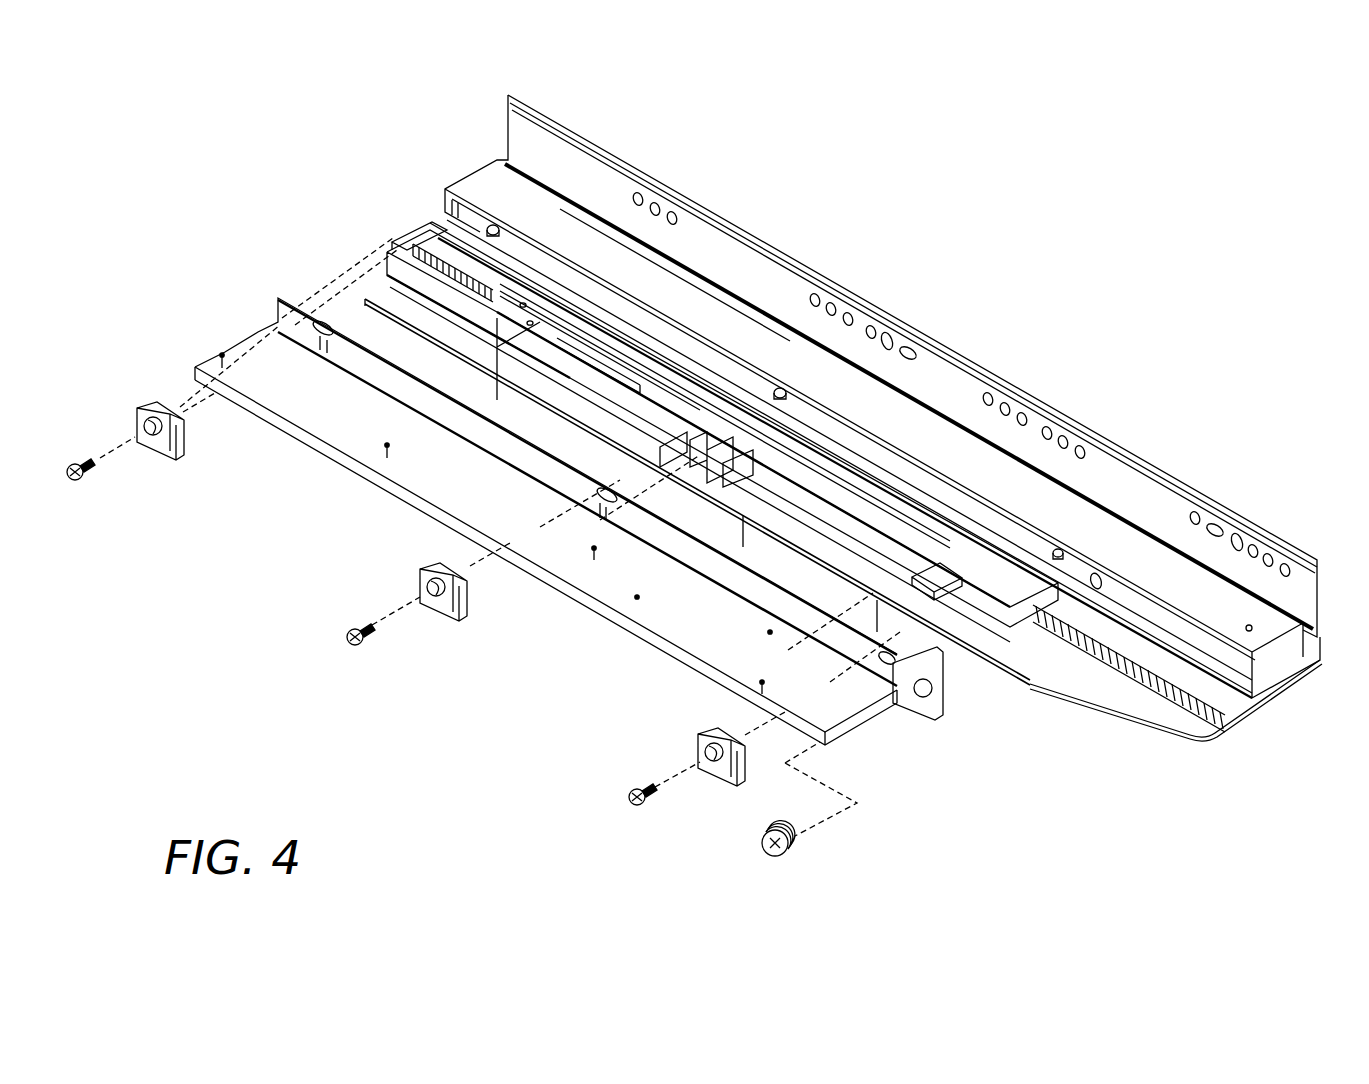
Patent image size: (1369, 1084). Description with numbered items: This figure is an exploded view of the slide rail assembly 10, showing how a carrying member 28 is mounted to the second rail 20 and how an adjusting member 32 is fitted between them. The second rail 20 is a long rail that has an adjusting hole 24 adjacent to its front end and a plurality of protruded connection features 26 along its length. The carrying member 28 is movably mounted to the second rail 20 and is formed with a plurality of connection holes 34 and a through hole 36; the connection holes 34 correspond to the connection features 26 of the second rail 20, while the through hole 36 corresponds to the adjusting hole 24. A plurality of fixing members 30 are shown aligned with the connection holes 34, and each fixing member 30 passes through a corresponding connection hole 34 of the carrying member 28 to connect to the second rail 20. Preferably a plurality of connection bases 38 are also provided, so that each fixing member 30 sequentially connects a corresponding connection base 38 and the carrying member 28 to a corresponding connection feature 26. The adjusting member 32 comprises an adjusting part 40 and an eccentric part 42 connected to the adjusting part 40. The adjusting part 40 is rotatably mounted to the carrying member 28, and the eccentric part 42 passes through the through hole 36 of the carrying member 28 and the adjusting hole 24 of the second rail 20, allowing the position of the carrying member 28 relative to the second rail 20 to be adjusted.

The slide rail assembly 10 is at (783, 224).
The second rail 20 is at (836, 395).
The adjusting hole 24 is at (1100, 576).
The connection features 26 is at (493, 224).
The carrying member 28 is at (277, 430).
The fixing members 30 is at (86, 481).
The adjusting member 32 is at (795, 875).
The connection holes 34 is at (335, 329).
The through hole 36 is at (932, 690).
The connection bases 38 is at (160, 458).
The adjusting part 40 is at (785, 850).
The eccentric part 42 is at (778, 870).